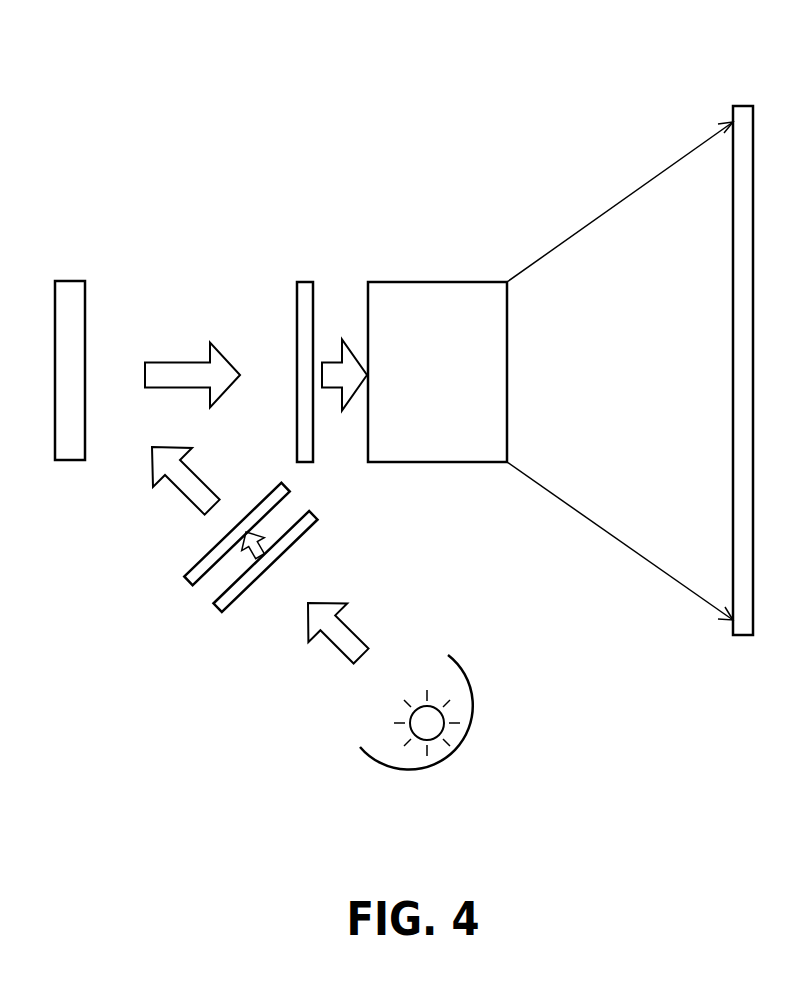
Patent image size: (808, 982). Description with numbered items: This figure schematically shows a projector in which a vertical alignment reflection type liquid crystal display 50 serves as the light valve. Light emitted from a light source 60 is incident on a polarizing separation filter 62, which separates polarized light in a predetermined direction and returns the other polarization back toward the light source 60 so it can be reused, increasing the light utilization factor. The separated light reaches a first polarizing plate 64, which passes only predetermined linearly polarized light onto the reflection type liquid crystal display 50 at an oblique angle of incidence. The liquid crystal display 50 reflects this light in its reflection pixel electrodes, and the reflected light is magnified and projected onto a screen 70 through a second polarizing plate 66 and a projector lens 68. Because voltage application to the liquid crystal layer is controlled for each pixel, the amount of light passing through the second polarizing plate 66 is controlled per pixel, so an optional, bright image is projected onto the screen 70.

The reflection type liquid crystal display 50 is at (74, 466).
The light source 60 is at (394, 776).
The polarizing separation filter 62 is at (217, 611).
The first polarizing plate 64 is at (188, 581).
The second polarizing plate 66 is at (311, 280).
The projector lens 68 is at (446, 280).
The screen 70 is at (749, 105).